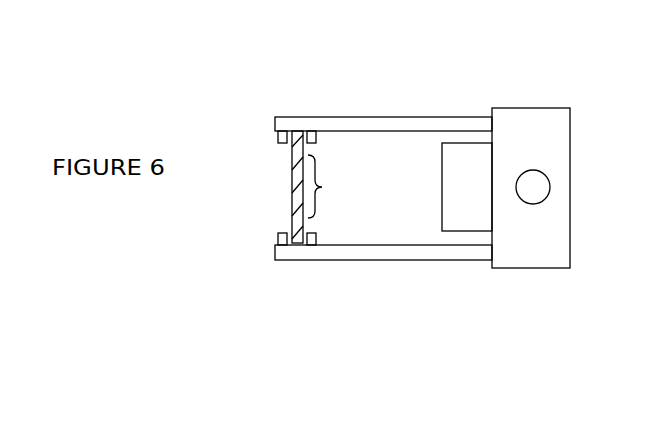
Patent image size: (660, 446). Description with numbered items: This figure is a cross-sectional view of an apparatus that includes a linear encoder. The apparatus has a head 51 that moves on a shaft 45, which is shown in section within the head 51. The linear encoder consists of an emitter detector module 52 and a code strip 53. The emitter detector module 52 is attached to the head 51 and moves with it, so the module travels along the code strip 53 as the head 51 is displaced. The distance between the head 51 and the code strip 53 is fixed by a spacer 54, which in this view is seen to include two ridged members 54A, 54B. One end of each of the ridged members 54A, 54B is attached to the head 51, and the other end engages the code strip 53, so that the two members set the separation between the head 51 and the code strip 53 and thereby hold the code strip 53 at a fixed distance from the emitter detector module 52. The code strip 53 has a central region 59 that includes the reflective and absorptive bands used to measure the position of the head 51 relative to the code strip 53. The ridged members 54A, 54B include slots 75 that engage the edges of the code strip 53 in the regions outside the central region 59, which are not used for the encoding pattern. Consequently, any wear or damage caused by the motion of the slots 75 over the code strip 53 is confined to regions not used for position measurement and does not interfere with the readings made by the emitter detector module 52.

The shaft 45 is at (533, 187).
The head 51 is at (560, 133).
The emitter detector module 52 is at (472, 218).
The code strip 53 is at (291, 226).
The spacer 54 is at (383, 189).
The ridged member 54A is at (358, 120).
The ridged member 54B is at (375, 252).
The central region 59 is at (333, 186).
The slots 75 is at (279, 139).